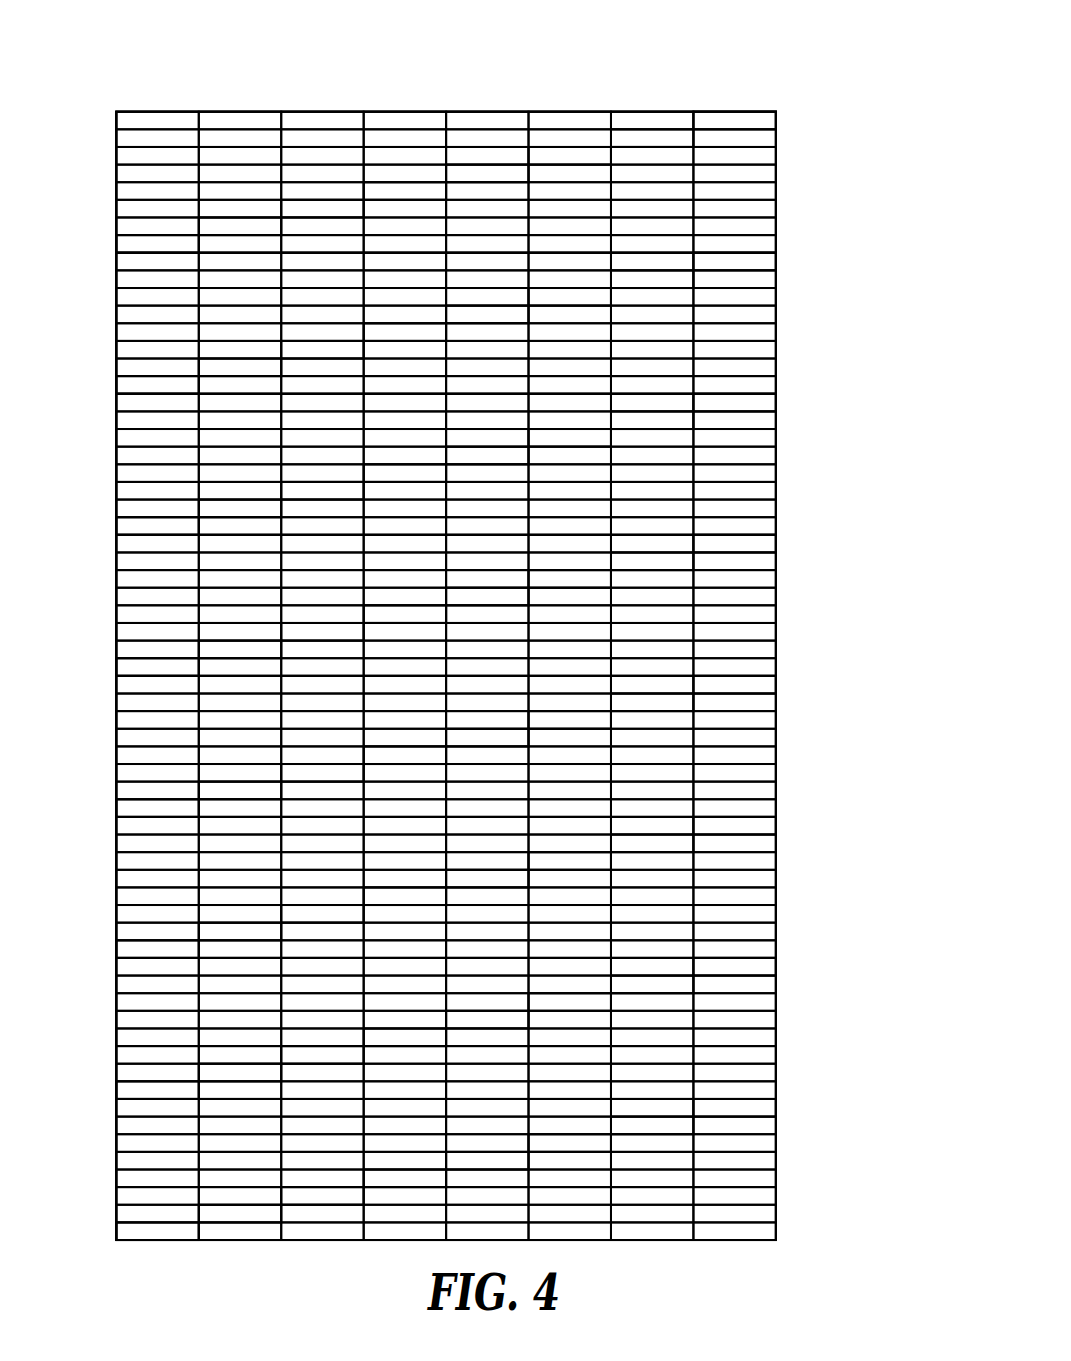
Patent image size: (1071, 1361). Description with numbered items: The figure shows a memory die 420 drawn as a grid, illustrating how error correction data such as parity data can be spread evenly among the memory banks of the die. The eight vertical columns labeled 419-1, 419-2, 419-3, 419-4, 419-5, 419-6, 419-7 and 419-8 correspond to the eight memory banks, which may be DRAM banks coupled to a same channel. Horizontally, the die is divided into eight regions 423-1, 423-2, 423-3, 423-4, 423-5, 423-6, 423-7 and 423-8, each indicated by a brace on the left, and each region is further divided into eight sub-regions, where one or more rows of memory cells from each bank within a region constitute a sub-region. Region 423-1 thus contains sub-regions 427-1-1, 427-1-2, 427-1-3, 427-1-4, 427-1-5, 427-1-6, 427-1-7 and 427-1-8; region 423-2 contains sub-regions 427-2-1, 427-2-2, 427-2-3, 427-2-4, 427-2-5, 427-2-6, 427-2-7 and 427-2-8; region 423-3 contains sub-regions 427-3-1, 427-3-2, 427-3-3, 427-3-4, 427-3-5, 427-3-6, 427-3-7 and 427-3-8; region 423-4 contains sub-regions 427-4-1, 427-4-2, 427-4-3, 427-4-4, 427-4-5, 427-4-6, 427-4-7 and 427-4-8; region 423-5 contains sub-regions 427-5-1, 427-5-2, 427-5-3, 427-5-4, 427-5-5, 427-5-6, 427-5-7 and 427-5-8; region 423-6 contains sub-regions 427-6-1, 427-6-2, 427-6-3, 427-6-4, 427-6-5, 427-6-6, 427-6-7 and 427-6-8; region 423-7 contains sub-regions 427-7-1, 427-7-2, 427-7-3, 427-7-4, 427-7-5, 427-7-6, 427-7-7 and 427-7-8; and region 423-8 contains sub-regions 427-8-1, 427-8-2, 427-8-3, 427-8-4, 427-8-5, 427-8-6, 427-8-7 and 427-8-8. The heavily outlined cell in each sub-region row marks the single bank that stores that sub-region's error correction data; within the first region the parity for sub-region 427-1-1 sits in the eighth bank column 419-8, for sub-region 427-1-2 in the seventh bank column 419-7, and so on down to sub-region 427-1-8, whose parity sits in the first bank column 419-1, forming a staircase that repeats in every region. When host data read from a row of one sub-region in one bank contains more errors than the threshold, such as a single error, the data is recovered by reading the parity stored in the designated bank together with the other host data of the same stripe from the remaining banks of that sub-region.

The memory die 420 is at (119, 40).
The column 419-1 is at (169, 646).
The column 419-2 is at (252, 646).
The column 419-3 is at (334, 646).
The column 419-4 is at (417, 646).
The column 419-5 is at (499, 646).
The column 419-6 is at (582, 646).
The column 419-7 is at (664, 646).
The column 419-8 is at (746, 646).
The region 423-1 is at (404, 182).
The region 423-2 is at (404, 323).
The region 423-3 is at (404, 464).
The region 423-4 is at (404, 605).
The region 423-5 is at (404, 746).
The region 423-6 is at (404, 887).
The region 423-7 is at (404, 1028).
The region 423-8 is at (404, 1169).
The sub-region 427-1-1 is at (496, 125).
The sub-region 427-1-2 is at (531, 142).
The sub-region 427-1-3 is at (496, 160).
The sub-region 427-1-4 is at (531, 178).
The sub-region 427-1-5 is at (496, 195).
The sub-region 427-1-6 is at (531, 213).
The sub-region 427-1-7 is at (496, 231).
The sub-region 427-1-8 is at (531, 248).
The sub-region 427-2-1 is at (496, 266).
The sub-region 427-2-2 is at (531, 283).
The sub-region 427-2-3 is at (496, 301).
The sub-region 427-2-4 is at (531, 319).
The sub-region 427-2-5 is at (496, 336).
The sub-region 427-2-6 is at (531, 354).
The sub-region 427-2-7 is at (496, 372).
The sub-region 427-2-8 is at (531, 389).
The sub-region 427-3-1 is at (496, 407).
The sub-region 427-3-2 is at (531, 424).
The sub-region 427-3-3 is at (496, 442).
The sub-region 427-3-4 is at (531, 460).
The sub-region 427-3-5 is at (496, 477).
The sub-region 427-3-6 is at (531, 495).
The sub-region 427-3-7 is at (496, 512).
The sub-region 427-3-8 is at (531, 530).
The sub-region 427-4-1 is at (496, 548).
The sub-region 427-4-2 is at (531, 566).
The sub-region 427-4-3 is at (496, 583).
The sub-region 427-4-4 is at (531, 601).
The sub-region 427-4-5 is at (496, 618).
The sub-region 427-4-6 is at (531, 636).
The sub-region 427-4-7 is at (496, 654).
The sub-region 427-4-8 is at (531, 671).
The sub-region 427-5-1 is at (496, 689).
The sub-region 427-5-2 is at (531, 707).
The sub-region 427-5-3 is at (496, 724).
The sub-region 427-5-4 is at (531, 742).
The sub-region 427-5-5 is at (496, 759).
The sub-region 427-5-6 is at (531, 777).
The sub-region 427-5-7 is at (496, 795).
The sub-region 427-5-8 is at (531, 812).
The sub-region 427-6-1 is at (496, 830).
The sub-region 427-6-2 is at (531, 848).
The sub-region 427-6-3 is at (496, 865).
The sub-region 427-6-4 is at (531, 883).
The sub-region 427-6-5 is at (496, 900).
The sub-region 427-6-6 is at (531, 918).
The sub-region 427-6-7 is at (496, 936).
The sub-region 427-6-8 is at (531, 953).
The sub-region 427-7-1 is at (496, 971).
The sub-region 427-7-2 is at (531, 989).
The sub-region 427-7-3 is at (496, 1006).
The sub-region 427-7-4 is at (531, 1024).
The sub-region 427-7-5 is at (496, 1042).
The sub-region 427-7-6 is at (531, 1059).
The sub-region 427-7-7 is at (496, 1077).
The sub-region 427-7-8 is at (531, 1094).
The sub-region 427-8-1 is at (496, 1112).
The sub-region 427-8-2 is at (531, 1130).
The sub-region 427-8-3 is at (496, 1147).
The sub-region 427-8-4 is at (531, 1165).
The sub-region 427-8-5 is at (496, 1183).
The sub-region 427-8-6 is at (531, 1200).
The sub-region 427-8-7 is at (496, 1218).
The sub-region 427-8-8 is at (531, 1235).